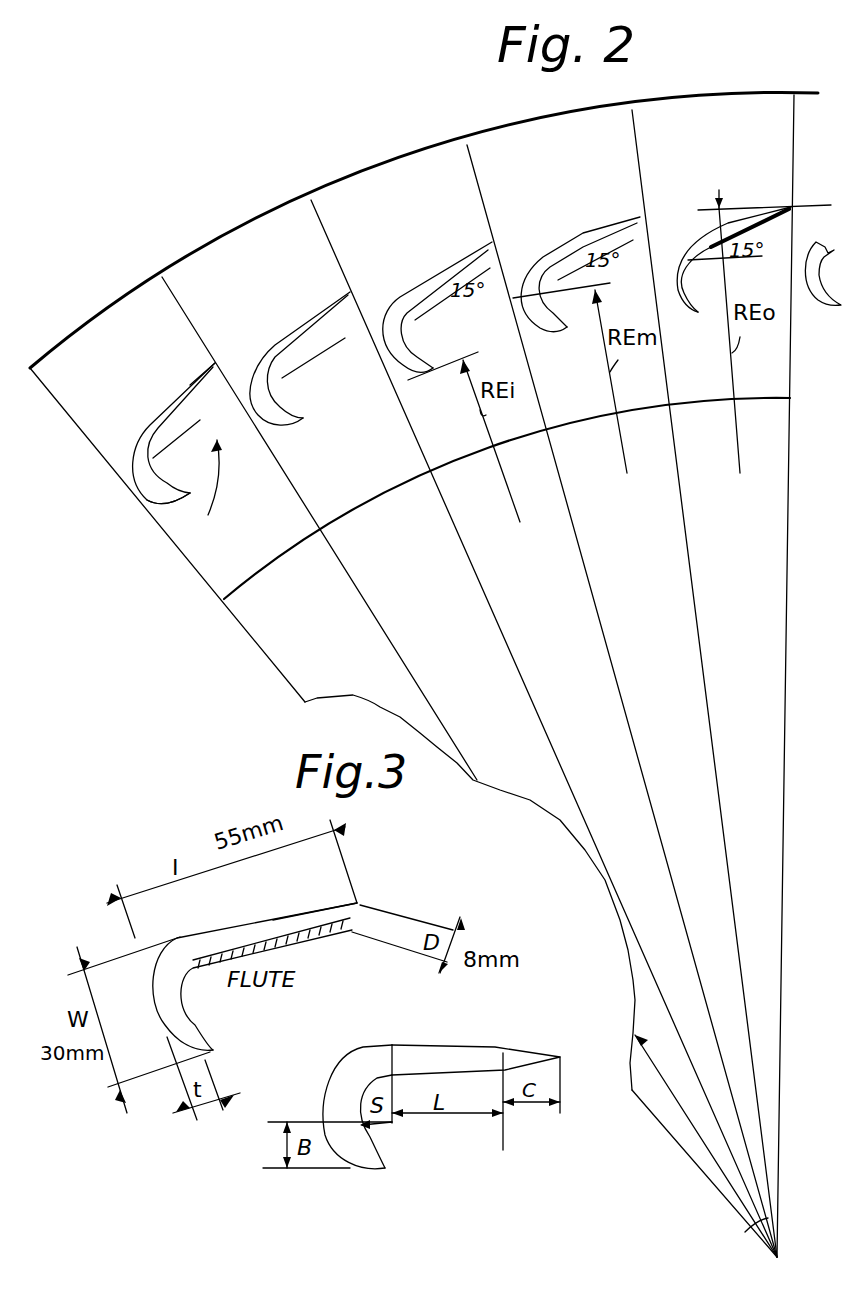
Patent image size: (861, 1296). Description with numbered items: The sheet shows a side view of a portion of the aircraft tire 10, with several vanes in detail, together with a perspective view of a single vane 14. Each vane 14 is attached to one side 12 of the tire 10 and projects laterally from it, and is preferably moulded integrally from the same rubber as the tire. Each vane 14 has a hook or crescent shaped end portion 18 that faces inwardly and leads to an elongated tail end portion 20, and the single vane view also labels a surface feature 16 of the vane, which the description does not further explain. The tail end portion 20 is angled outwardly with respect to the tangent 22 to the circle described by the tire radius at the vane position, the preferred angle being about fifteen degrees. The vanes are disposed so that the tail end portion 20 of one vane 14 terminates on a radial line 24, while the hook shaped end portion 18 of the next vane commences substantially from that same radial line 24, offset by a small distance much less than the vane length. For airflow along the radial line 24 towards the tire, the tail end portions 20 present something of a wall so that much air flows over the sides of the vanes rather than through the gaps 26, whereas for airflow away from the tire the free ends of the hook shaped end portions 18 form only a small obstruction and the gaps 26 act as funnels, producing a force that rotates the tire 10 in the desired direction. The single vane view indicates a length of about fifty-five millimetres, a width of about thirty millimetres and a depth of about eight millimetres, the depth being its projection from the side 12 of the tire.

In FIG. 2, the aircraft tire 10 is at (224, 240).
In FIG. 2, the side of the tire 12 is at (222, 556).
In FIG. 2, the vane 14 is at (153, 418).
In FIG. 3, the flute 16 is at (287, 920).
In FIG. 2, the hook shaped end portion 18 is at (133, 490).
In FIG. 3, the hook shaped end portion 18 is at (190, 1012).
In FIG. 2, the tail end portion 20 is at (197, 375).
In FIG. 2, the tangent 22 is at (315, 358).
In FIG. 2, the radial line 24 is at (290, 472).
In FIG. 2, the gap 26 is at (222, 488).